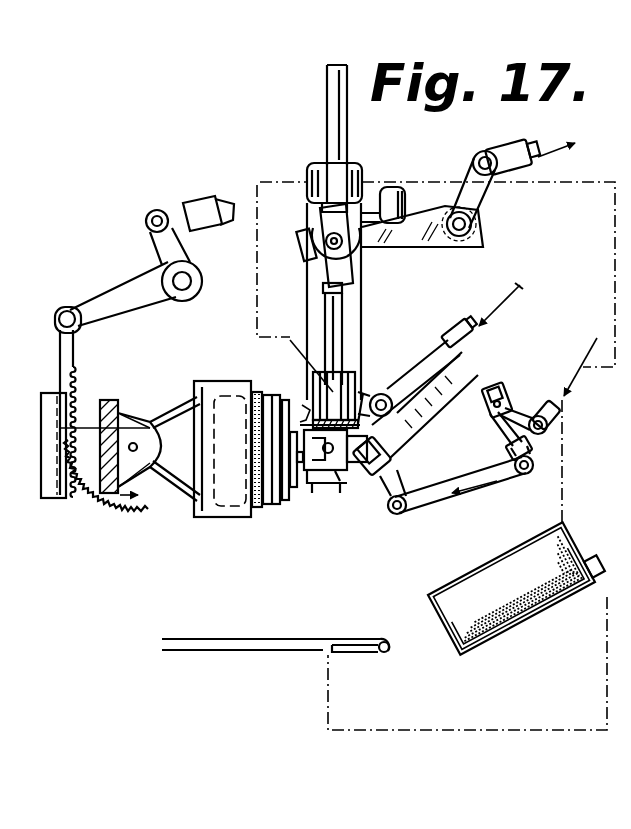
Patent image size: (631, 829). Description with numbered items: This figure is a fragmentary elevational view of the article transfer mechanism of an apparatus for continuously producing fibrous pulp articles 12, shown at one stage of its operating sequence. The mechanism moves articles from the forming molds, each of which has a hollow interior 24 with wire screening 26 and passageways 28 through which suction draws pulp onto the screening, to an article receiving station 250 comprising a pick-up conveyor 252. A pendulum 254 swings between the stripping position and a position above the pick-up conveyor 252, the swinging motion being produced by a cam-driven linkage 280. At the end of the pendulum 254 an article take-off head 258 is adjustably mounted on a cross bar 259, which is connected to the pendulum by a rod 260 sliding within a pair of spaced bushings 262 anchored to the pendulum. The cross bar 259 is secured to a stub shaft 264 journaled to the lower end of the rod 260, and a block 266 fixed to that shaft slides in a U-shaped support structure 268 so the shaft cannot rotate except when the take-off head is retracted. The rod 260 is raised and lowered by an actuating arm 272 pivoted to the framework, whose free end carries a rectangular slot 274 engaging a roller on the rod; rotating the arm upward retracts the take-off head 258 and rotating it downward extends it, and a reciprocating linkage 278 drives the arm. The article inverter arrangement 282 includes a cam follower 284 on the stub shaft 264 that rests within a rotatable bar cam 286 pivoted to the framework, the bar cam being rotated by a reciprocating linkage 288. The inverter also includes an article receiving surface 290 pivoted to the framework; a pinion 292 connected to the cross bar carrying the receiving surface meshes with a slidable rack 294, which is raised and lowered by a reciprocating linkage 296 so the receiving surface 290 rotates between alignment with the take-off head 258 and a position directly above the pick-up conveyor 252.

The fibrous pulp article 12 is at (253, 503).
The hollow interior 24 is at (453, 642).
The wire screening 26 is at (445, 626).
The passageways 28 is at (527, 612).
The article receiving station 250 is at (322, 635).
The pick-up conveyor 252 is at (326, 650).
The pendulum 254 is at (307, 307).
The article take-off head 258 is at (352, 478).
The cross bar 259 is at (303, 442).
The rod 260 is at (338, 314).
The bushings 262 is at (331, 178).
The stub shaft 264 is at (330, 471).
The block 266 is at (356, 478).
The U-shaped support structure 268 is at (343, 480).
The actuating arm 272 is at (422, 250).
The slot 274 is at (312, 246).
The reciprocating linkage 278 is at (470, 200).
The linkage 280 is at (455, 343).
The article inverter arrangement 282 is at (211, 379).
The cam follower 284 is at (398, 460).
The bar cam 286 is at (430, 412).
The reciprocating linkage 288 is at (498, 474).
The article receiving surface 290 is at (229, 392).
The pinion 292 is at (147, 488).
The rack 294 is at (73, 364).
The reciprocating linkage 296 is at (130, 295).